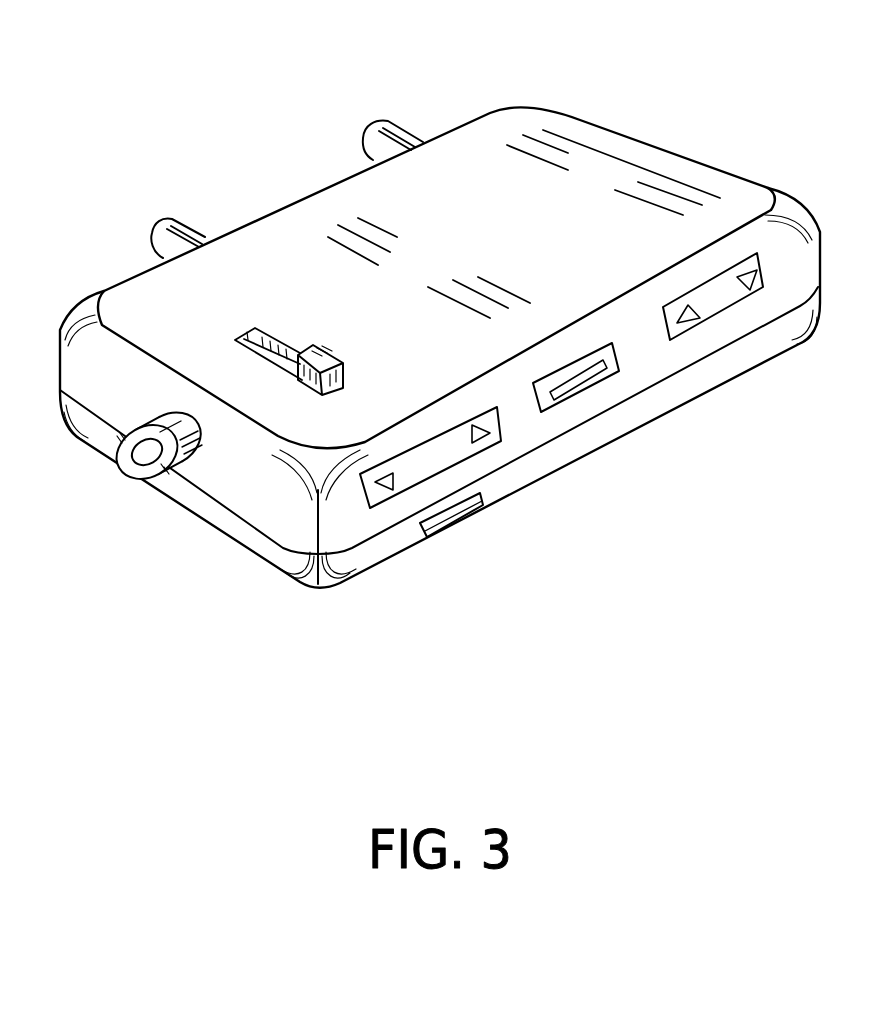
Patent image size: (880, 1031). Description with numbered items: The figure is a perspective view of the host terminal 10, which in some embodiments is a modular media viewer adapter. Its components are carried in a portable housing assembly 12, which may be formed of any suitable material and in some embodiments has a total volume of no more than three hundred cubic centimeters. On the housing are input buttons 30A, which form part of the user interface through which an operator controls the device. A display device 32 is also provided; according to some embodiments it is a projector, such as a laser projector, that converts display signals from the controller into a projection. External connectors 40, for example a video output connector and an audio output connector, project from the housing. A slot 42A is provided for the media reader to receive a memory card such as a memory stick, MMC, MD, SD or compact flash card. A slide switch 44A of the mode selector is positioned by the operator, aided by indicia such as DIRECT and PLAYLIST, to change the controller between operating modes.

The host terminal 10 is at (710, 52).
The portable housing assembly 12 is at (668, 155).
The input buttons 30A is at (500, 432).
The display device 32 is at (116, 447).
The external connectors 40 is at (183, 215).
The slot 42A is at (433, 528).
The slide switch 44A is at (298, 380).